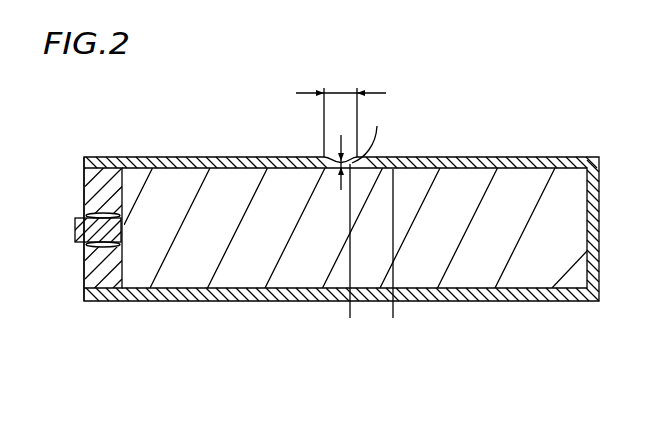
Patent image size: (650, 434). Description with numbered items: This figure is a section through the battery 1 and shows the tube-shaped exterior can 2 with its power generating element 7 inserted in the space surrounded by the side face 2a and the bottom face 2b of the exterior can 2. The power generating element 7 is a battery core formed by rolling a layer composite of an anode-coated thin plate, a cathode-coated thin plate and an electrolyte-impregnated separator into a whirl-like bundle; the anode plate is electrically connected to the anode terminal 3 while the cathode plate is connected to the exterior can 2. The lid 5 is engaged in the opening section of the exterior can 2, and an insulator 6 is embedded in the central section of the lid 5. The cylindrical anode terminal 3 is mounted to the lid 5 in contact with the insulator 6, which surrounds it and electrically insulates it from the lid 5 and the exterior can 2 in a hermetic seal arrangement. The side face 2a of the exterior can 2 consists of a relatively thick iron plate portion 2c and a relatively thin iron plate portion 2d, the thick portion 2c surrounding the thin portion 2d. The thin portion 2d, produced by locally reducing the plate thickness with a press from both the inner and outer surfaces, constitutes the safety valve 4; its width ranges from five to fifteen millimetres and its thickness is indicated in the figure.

The battery 1 is at (241, 140).
The exterior can 2 is at (441, 375).
The side face 2a is at (447, 157).
The bottom face 2b is at (598, 235).
The relatively thick iron plate portion 2c is at (388, 257).
The relatively thin iron plate portion 2d is at (349, 255).
The anode terminal 3 is at (75, 228).
The safety valve 4 is at (318, 148).
The lid 5 is at (104, 180).
The insulator 6 is at (87, 214).
The power generating element 7 is at (512, 196).